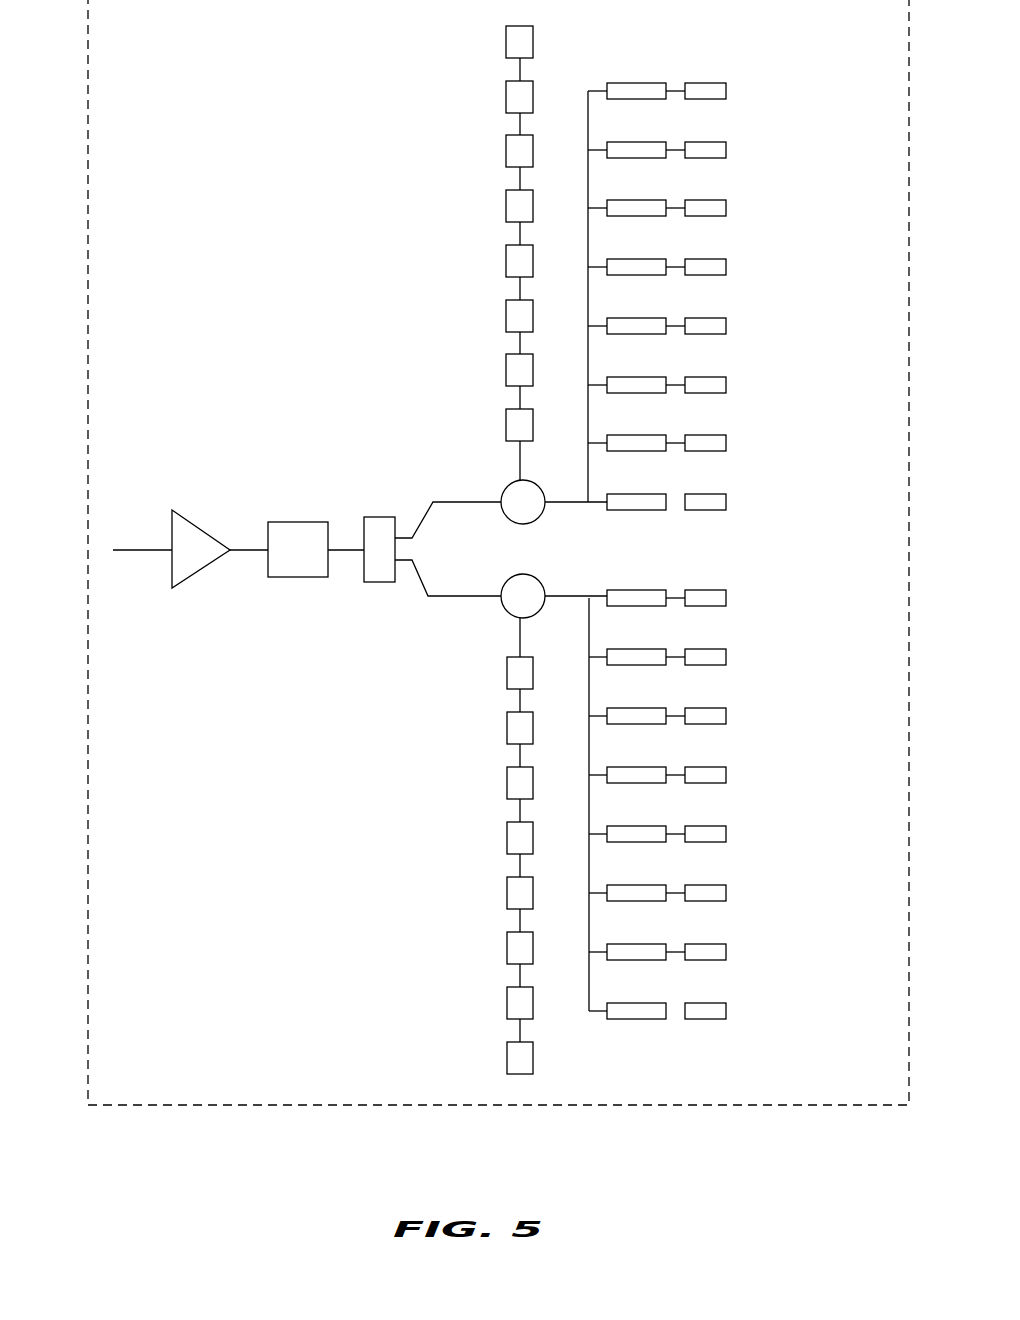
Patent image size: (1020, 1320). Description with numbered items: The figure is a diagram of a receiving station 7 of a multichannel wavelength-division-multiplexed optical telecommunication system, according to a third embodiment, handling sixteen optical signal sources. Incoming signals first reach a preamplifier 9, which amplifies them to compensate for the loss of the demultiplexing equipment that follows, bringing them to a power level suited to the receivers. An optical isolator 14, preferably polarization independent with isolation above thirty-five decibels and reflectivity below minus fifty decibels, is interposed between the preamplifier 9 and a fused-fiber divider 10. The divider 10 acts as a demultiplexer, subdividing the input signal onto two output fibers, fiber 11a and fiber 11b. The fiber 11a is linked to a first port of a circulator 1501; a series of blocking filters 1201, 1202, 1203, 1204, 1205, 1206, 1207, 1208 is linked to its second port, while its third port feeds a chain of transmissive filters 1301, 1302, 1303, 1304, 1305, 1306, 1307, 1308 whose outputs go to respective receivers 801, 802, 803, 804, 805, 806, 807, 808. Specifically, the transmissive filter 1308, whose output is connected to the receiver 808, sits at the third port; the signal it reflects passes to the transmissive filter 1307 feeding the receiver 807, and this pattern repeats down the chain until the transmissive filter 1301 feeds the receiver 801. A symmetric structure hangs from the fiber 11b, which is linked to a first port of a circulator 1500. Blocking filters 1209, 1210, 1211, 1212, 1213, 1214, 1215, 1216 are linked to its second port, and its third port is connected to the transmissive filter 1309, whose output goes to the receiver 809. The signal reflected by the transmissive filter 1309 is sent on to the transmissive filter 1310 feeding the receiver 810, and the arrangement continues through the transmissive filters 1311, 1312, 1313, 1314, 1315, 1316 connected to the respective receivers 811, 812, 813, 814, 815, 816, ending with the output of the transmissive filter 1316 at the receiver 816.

The receiving station 7 is at (88, 1000).
The preamplifier 9 is at (200, 529).
The optical isolator 14 is at (285, 522).
The fused-fiber divider 10 is at (370, 517).
The fiber 11a is at (440, 501).
The fiber 11b is at (428, 597).
The circulator 1501 is at (506, 487).
The circulator 1500 is at (506, 612).
The blocking filter 1201 is at (506, 48).
The blocking filter 1202 is at (506, 103).
The blocking filter 1203 is at (506, 157).
The blocking filter 1204 is at (506, 212).
The blocking filter 1205 is at (506, 267).
The blocking filter 1206 is at (506, 322).
The blocking filter 1207 is at (506, 376).
The blocking filter 1208 is at (506, 412).
The blocking filter 1209 is at (507, 678).
The blocking filter 1210 is at (507, 726).
The blocking filter 1211 is at (507, 781).
The blocking filter 1212 is at (507, 836).
The blocking filter 1213 is at (507, 891).
The blocking filter 1214 is at (507, 946).
The blocking filter 1215 is at (507, 1001).
The blocking filter 1216 is at (507, 1056).
The transmissive filter 1301 is at (618, 84).
The transmissive filter 1302 is at (618, 143).
The transmissive filter 1303 is at (618, 201).
The transmissive filter 1304 is at (618, 260).
The transmissive filter 1305 is at (618, 319).
The transmissive filter 1306 is at (618, 378).
The transmissive filter 1307 is at (618, 436).
The transmissive filter 1308 is at (618, 495).
The transmissive filter 1309 is at (618, 591).
The transmissive filter 1310 is at (618, 650).
The transmissive filter 1311 is at (618, 709).
The transmissive filter 1312 is at (618, 768).
The transmissive filter 1313 is at (618, 827).
The transmissive filter 1314 is at (618, 886).
The transmissive filter 1315 is at (618, 945).
The transmissive filter 1316 is at (618, 1004).
The receiver 801 is at (694, 84).
The receiver 802 is at (694, 143).
The receiver 803 is at (694, 201).
The receiver 804 is at (694, 260).
The receiver 805 is at (694, 319).
The receiver 806 is at (694, 378).
The receiver 807 is at (694, 436).
The receiver 808 is at (694, 495).
The receiver 809 is at (694, 591).
The receiver 810 is at (694, 650).
The receiver 811 is at (694, 709).
The receiver 812 is at (694, 768).
The receiver 813 is at (694, 827).
The receiver 814 is at (694, 886).
The receiver 815 is at (694, 945).
The receiver 816 is at (694, 1004).